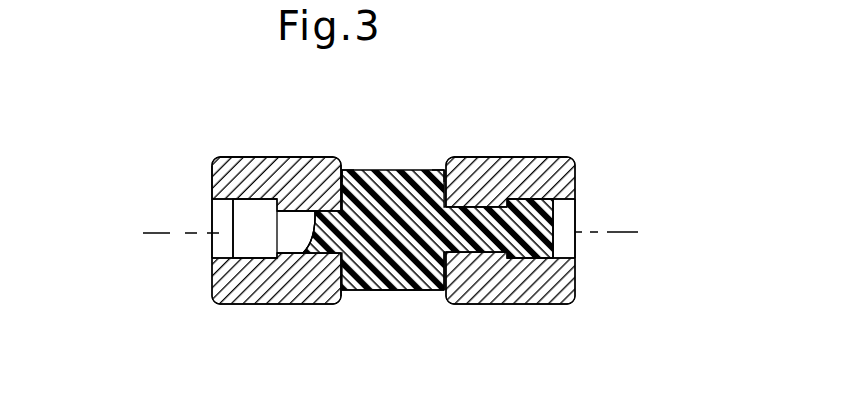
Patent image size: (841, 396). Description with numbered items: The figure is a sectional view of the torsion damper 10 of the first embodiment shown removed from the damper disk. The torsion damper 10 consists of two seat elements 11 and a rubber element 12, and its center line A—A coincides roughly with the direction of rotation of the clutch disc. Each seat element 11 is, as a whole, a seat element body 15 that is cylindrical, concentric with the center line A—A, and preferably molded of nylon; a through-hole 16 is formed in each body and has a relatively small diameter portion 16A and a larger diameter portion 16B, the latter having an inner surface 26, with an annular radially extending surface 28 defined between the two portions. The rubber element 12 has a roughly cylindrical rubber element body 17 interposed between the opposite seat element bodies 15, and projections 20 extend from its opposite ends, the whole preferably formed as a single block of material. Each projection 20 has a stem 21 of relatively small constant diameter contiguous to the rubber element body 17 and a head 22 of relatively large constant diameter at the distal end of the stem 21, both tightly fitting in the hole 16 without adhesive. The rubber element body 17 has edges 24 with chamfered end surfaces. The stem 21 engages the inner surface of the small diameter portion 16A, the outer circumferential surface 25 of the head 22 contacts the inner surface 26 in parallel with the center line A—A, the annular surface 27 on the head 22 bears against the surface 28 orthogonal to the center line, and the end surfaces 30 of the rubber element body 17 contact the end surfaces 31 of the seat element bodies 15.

The torsion damper 10 is at (233, 132).
The seat element 11 is at (213, 153).
The rubber element 12 is at (402, 168).
The seat element body 15 is at (214, 284).
The through-hole 16 is at (222, 217).
The small diameter portion 16A is at (370, 290).
The larger diameter portion 16B is at (213, 183).
The rubber element body 17 is at (395, 268).
The projection 20 is at (231, 241).
The stem 21 is at (295, 210).
The head 22 is at (265, 256).
The edges 24 is at (343, 170).
The outer circumferential surface 25 is at (273, 198).
The inner surface 26 is at (245, 201).
The annular surface 27 is at (283, 250).
The annular radially extending surface 28 is at (512, 200).
The end surfaces 30 is at (335, 185).
The end surfaces 31 is at (352, 178).
The center line A is at (390, 231).